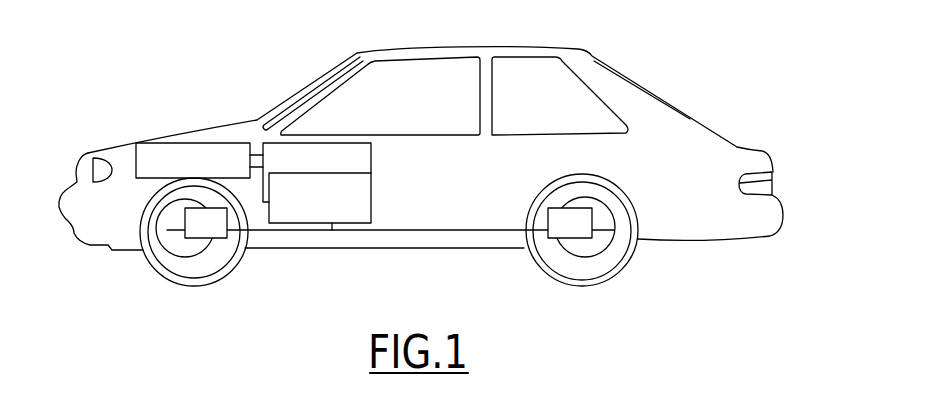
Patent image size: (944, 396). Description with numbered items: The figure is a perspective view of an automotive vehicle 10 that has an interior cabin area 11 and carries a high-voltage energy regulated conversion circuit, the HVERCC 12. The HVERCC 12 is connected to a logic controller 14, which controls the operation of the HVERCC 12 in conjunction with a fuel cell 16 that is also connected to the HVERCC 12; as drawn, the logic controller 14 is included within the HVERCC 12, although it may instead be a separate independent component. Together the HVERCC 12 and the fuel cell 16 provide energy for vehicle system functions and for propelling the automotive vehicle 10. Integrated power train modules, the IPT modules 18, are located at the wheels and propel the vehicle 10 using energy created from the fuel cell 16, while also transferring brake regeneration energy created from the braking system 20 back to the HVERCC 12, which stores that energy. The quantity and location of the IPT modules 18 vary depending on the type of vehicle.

The automotive vehicle 10 is at (716, 79).
The interior cabin area 11 is at (350, 122).
The high-voltage energy regulated conversion circuit (HVERCC) 12 is at (373, 161).
The logic controller 14 is at (373, 193).
The fuel cell 16 is at (187, 143).
The integrated power train (IPT) modules 18 is at (223, 238).
The braking system 20 is at (163, 225).